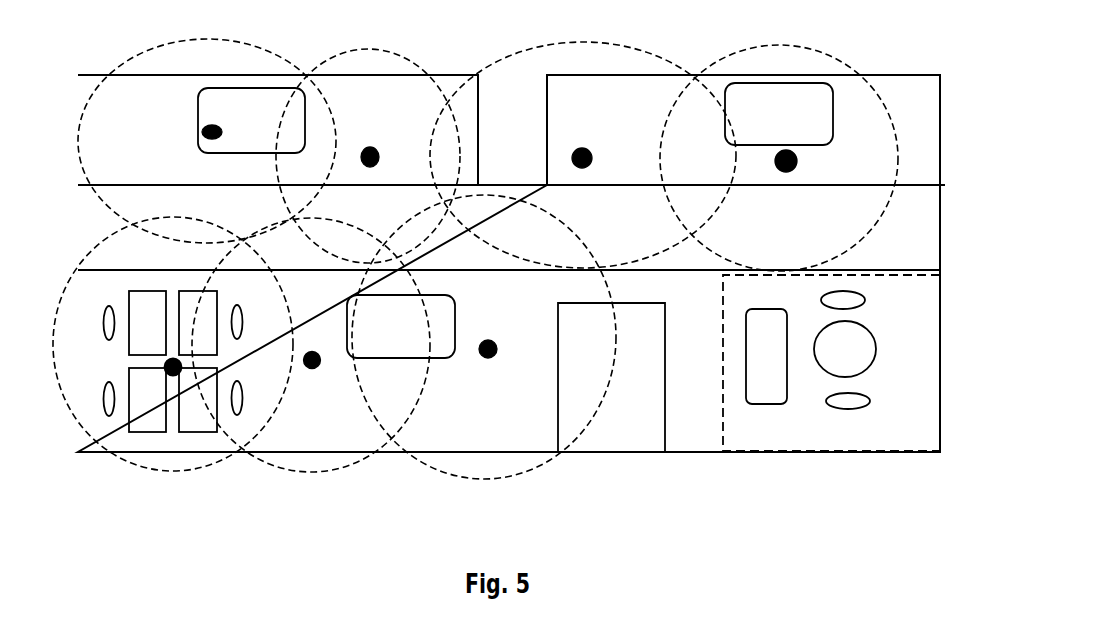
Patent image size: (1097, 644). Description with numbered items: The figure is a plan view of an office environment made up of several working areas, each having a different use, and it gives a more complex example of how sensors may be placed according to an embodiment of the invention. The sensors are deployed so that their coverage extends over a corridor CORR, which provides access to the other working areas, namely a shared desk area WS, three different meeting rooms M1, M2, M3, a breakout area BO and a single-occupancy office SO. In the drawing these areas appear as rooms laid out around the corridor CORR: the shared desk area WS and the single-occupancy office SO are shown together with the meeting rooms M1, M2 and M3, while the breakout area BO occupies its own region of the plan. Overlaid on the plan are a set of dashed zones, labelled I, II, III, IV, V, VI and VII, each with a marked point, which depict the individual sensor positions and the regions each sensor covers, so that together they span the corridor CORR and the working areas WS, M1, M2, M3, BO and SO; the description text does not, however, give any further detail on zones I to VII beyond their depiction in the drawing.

The zone I is at (207, 141).
The zone II is at (368, 156).
The zone III is at (583, 155).
The zone IV is at (779, 158).
The zone V is at (173, 344).
The zone VI is at (311, 345).
The zone VII is at (484, 337).
The meeting room M1 is at (251, 120).
The meeting room M2 is at (401, 326).
The meeting room M3 is at (779, 114).
The shared desk area WS is at (173, 361).
The single-occupancy office SO is at (611, 377).
The breakout area BO is at (831, 363).
The corridor CORR is at (509, 252).